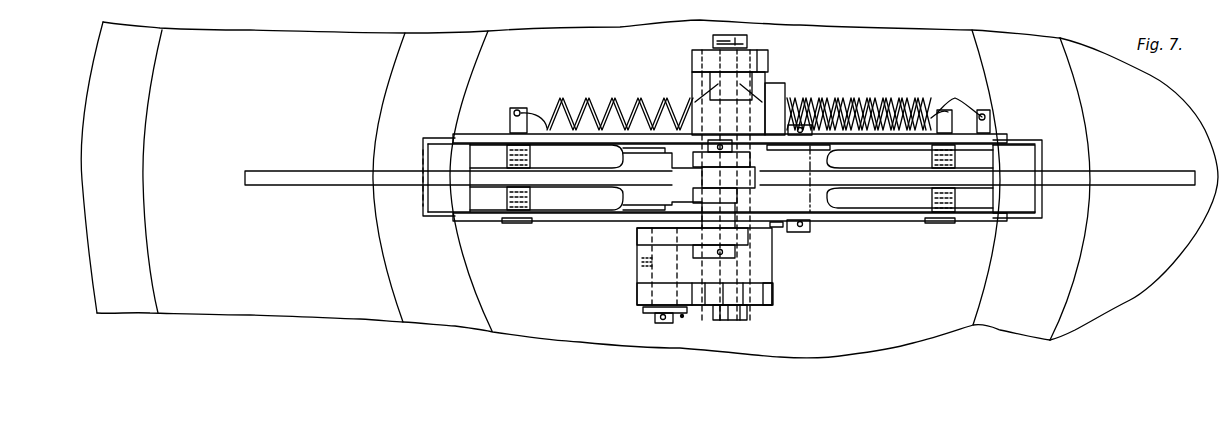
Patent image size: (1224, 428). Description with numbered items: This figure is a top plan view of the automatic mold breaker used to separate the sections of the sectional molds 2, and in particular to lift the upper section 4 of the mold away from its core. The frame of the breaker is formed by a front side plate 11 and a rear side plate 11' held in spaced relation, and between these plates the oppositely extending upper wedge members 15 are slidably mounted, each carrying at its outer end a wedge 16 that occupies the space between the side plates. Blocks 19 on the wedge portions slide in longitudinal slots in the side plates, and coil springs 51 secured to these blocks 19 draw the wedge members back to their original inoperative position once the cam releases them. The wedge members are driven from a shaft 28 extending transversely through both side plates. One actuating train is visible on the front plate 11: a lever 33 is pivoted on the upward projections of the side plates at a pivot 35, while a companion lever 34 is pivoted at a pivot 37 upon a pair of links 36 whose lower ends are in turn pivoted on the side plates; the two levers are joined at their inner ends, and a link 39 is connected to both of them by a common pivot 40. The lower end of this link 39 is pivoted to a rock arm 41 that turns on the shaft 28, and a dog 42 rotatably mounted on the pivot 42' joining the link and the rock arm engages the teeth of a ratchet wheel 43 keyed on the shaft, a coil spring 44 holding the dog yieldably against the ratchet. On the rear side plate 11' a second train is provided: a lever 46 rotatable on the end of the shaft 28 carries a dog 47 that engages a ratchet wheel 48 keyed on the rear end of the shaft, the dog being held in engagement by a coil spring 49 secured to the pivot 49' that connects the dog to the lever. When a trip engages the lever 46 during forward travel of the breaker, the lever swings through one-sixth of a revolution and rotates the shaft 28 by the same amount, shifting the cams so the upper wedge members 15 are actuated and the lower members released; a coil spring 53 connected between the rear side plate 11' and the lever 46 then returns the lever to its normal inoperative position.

The sectional mold 2 is at (193, 321).
The upper section of the mold 4 is at (245, 296).
The front side plate 11 is at (730, 193).
The rear side plate 11' is at (1017, 154).
The upper wedge members 15 is at (575, 201).
The wedges 16 is at (434, 205).
The blocks 19 is at (522, 224).
The shaft 28 is at (742, 313).
The lever 33 is at (1140, 186).
The lever 34 is at (288, 185).
The pivot 35 is at (810, 233).
The links 36 is at (623, 149).
The pivot 37 is at (668, 182).
The link 39 is at (645, 232).
The common pivot 40 is at (712, 253).
The rock arm 41 is at (640, 275).
The dog 42 is at (683, 298).
The pivot 42' is at (646, 323).
The ratchet wheel 43 is at (770, 295).
The coil spring 44 is at (686, 310).
The lever 46 is at (762, 87).
The dog 47 is at (692, 60).
The ratchet wheel 48 is at (768, 58).
The coil spring 49 is at (747, 37).
The pivot 49' is at (710, 37).
The coil springs 51 is at (580, 98).
The coil spring 53 is at (928, 103).